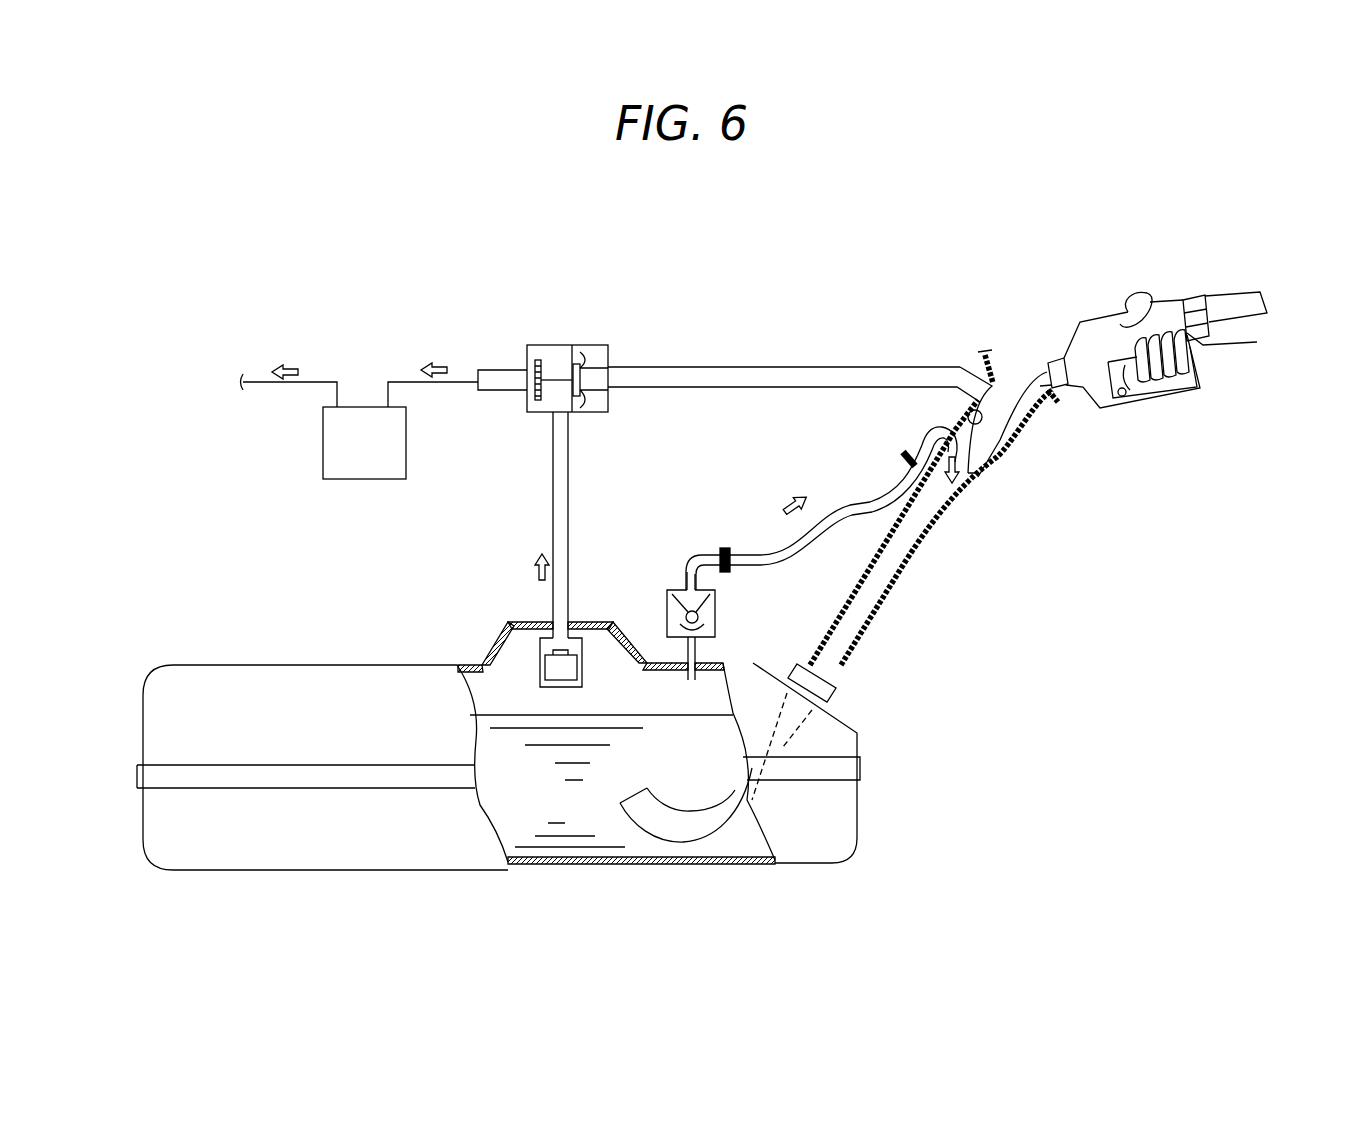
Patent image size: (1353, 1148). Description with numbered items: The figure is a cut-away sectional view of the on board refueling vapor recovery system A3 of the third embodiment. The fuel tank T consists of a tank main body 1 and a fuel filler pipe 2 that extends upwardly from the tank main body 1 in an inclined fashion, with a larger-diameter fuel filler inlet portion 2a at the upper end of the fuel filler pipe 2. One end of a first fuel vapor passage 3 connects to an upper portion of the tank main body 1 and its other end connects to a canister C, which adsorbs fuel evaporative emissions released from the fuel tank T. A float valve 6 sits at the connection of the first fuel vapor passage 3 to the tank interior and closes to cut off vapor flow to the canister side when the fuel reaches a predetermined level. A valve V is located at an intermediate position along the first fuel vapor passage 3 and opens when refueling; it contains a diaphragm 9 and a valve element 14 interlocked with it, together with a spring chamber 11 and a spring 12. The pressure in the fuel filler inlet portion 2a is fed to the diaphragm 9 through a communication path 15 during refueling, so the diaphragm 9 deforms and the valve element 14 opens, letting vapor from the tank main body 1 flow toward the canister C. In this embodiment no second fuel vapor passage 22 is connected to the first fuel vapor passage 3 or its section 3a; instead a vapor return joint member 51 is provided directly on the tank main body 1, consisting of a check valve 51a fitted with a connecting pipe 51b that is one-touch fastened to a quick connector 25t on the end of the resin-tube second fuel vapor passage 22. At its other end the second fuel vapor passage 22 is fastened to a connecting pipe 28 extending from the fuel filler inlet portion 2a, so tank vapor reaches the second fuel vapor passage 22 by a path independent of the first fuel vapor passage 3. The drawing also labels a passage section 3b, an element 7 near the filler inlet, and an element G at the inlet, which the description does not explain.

The tank main body 1 is at (880, 742).
The fuel filler pipe 2 is at (836, 655).
The fuel filler inlet portion 2a is at (1000, 455).
The first fuel vapor passage 3 is at (475, 443).
The first fuel vapor passage section 3a is at (553, 492).
The vapor passage upper section 3b is at (507, 391).
The float valve 6 is at (530, 647).
The breather tube 7 is at (957, 423).
The diaphragm 9 is at (592, 345).
The spring chamber 11 is at (603, 410).
The spring 12 is at (607, 345).
The valve element 14 is at (548, 345).
The communication path 15 is at (760, 366).
The second fuel vapor passage 22 is at (782, 492).
The quick connector 25t is at (723, 548).
The connecting pipe 28 is at (932, 443).
The vapor return joint member 51 is at (688, 537).
The check valve 51a is at (665, 627).
The connecting pipe 51b is at (685, 582).
The on board refueling vapor recovery system A3 is at (985, 578).
The canister C is at (361, 397).
The fuel nozzle gun G is at (1106, 300).
The fuel tank T is at (979, 657).
The valve V is at (570, 320).